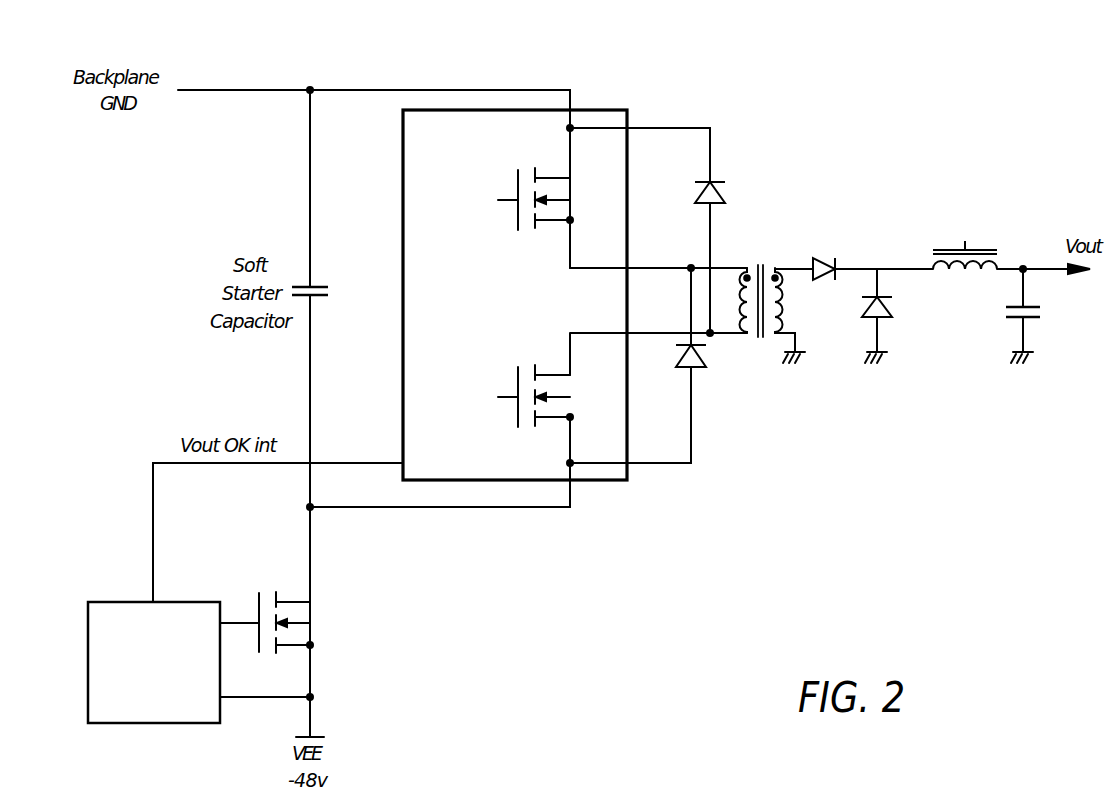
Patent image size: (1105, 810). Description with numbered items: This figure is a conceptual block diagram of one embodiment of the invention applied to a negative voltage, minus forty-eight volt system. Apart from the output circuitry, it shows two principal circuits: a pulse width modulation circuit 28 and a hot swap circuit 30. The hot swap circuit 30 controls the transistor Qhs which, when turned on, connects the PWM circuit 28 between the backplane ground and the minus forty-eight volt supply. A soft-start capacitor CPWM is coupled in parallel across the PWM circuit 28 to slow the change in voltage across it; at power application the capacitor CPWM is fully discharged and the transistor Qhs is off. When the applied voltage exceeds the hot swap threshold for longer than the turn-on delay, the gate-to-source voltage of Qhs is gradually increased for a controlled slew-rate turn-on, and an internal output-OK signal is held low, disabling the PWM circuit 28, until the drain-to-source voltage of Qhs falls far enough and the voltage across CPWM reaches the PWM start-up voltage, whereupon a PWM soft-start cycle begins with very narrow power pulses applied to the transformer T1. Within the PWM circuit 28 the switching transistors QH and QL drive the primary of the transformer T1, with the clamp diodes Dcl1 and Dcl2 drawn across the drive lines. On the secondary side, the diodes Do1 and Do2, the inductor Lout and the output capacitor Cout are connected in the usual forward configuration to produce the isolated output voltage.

The pulse width modulation (PWM) circuit 28 is at (480, 110).
The hot swap circuit 30 is at (128, 602).
The soft-start capacitor CPWM is at (340, 291).
The transistor QH is at (534, 187).
The transistor QL is at (534, 383).
The transistor Qhs is at (335, 629).
The diode Dcl1 is at (731, 191).
The diode Dcl2 is at (709, 366).
The transformer T1 is at (772, 301).
The diode Do1 is at (821, 252).
The diode Do2 is at (901, 309).
The inductor Lout is at (965, 255).
The output capacitor Cout is at (1009, 298).